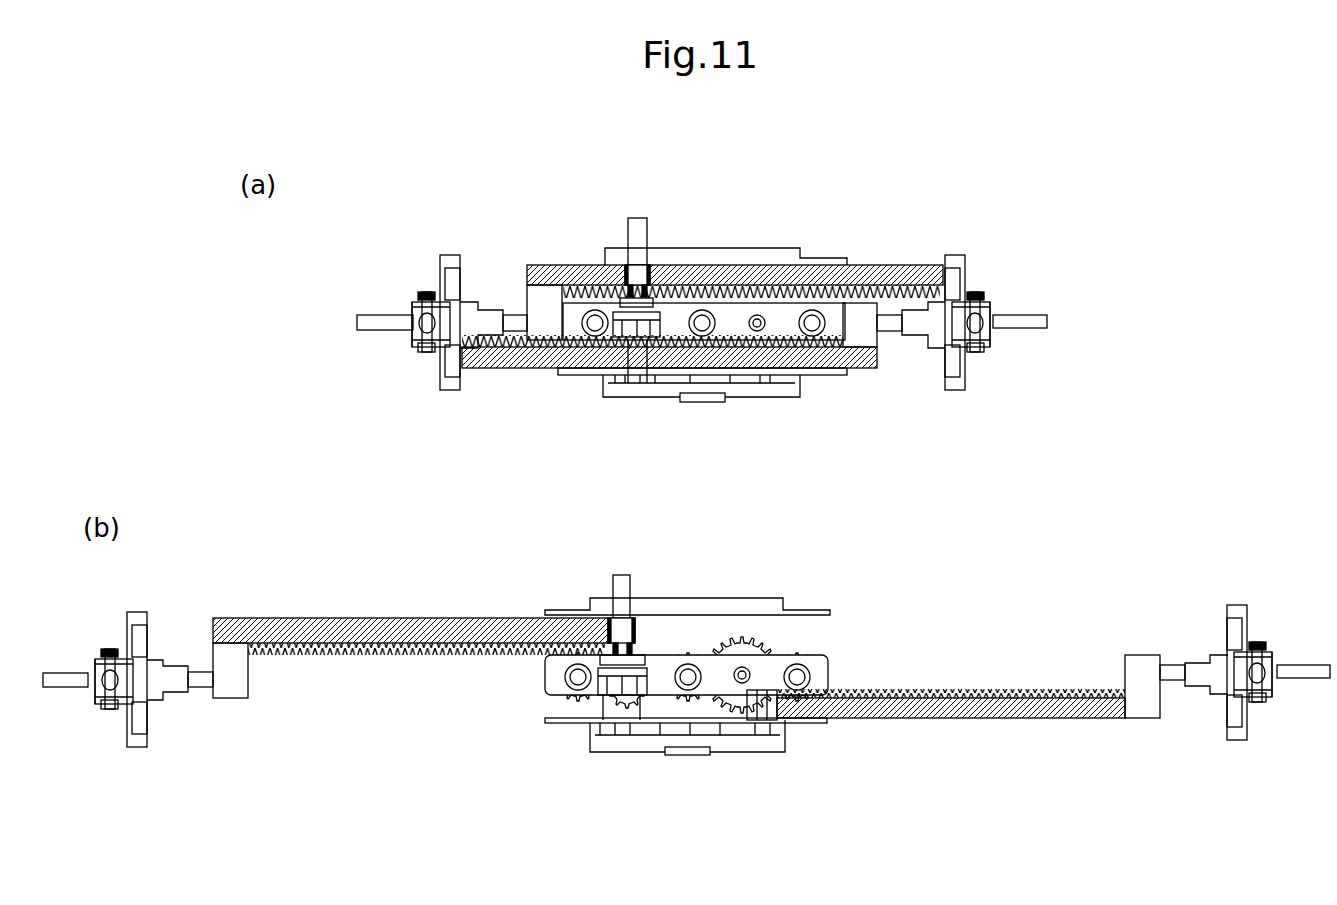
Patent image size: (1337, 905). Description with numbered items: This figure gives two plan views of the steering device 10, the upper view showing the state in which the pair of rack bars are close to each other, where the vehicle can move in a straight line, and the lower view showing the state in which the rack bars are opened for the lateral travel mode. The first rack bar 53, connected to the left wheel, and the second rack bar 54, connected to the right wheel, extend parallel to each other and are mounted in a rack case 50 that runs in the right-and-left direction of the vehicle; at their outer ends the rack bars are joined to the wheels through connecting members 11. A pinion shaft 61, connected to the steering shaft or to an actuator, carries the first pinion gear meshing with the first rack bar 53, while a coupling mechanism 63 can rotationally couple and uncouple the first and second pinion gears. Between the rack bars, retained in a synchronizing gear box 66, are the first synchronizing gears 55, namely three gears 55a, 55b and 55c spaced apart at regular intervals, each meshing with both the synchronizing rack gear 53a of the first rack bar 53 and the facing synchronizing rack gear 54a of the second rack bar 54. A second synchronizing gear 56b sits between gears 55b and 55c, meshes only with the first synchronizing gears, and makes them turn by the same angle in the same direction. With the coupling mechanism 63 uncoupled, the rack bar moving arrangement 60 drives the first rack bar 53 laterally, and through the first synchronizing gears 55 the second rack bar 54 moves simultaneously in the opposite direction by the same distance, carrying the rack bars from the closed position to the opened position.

The steering device 10 is at (983, 254).
The connecting member 11 is at (365, 320).
The rack case 50 is at (780, 390).
The first rack bar 53 is at (538, 265).
The synchronizing rack gear 53a is at (915, 297).
The second rack bar 54 is at (494, 356).
The synchronizing rack gear 54a is at (528, 356).
The first synchronizing gears 55 is at (715, 466).
The gear 55a is at (608, 318).
The gear 55b is at (709, 312).
The gear 55c is at (815, 310).
The gear 56b is at (760, 332).
The rack bar moving arrangement 60 is at (643, 206).
The pinion shaft 61 is at (627, 227).
The coupling mechanism 63 is at (635, 345).
The synchronizing gear box 66 is at (837, 327).